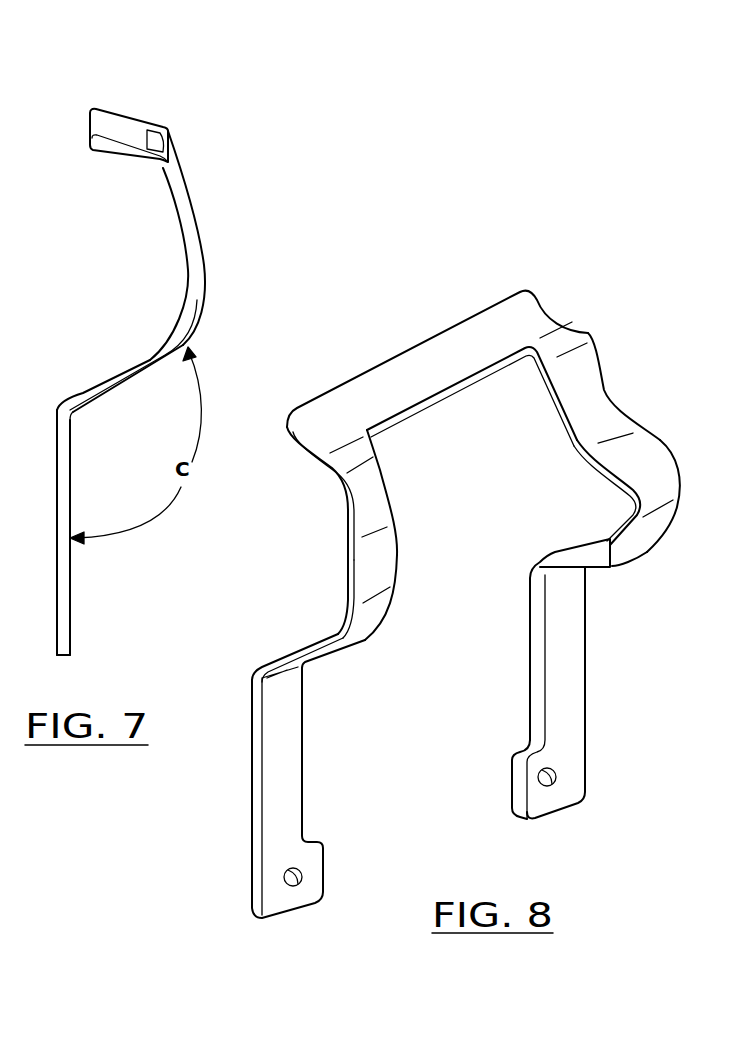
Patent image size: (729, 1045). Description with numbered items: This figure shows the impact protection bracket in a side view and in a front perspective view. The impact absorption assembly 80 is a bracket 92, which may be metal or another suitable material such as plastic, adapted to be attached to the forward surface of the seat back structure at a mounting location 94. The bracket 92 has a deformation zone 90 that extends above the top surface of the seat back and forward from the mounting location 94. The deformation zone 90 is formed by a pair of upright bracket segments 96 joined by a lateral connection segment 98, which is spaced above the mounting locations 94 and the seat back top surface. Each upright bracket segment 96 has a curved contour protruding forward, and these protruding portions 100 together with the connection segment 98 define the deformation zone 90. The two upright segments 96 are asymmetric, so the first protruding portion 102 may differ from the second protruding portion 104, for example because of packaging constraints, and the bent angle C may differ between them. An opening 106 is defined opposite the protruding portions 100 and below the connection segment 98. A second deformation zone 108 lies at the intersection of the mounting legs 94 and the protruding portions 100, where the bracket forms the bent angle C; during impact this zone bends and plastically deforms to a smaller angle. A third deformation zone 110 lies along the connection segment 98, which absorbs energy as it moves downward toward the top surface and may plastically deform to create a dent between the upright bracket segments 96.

In FIG. 7, the impact absorption assembly 80 is at (150, 88).
In FIG. 8, the impact absorption assembly 80 is at (541, 243).
In FIG. 7, the deformation zone 90 is at (200, 234).
In FIG. 8, the deformation zone 90 is at (372, 491).
In FIG. 7, the bracket 92 is at (163, 136).
In FIG. 7, the mounting location 94 is at (70, 637).
In FIG. 8, the mounting location 94 is at (300, 870).
In FIG. 7, the bracket segments 96 is at (70, 480).
In FIG. 8, the bracket segments 96 is at (383, 523).
In FIG. 8, the connection segment 98 is at (390, 385).
In FIG. 8, the protruding portions 100 is at (348, 578).
In FIG. 8, the first protruding portion 102 is at (392, 566).
In FIG. 8, the second protruding portion 104 is at (598, 410).
In FIG. 7, the opening 106 is at (118, 262).
In FIG. 8, the opening 106 is at (322, 537).
In FIG. 7, the second deformation zone 108 is at (70, 418).
In FIG. 8, the second deformation zone 108 is at (283, 672).
In FIG. 8, the third deformation zone 110 is at (465, 343).